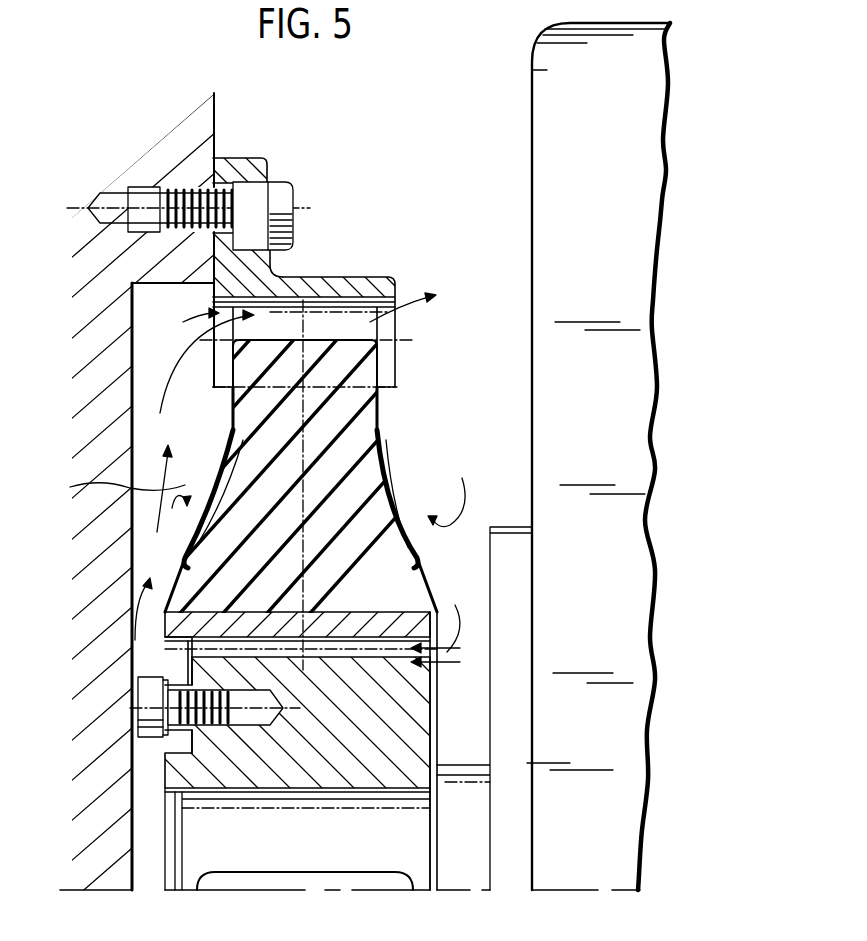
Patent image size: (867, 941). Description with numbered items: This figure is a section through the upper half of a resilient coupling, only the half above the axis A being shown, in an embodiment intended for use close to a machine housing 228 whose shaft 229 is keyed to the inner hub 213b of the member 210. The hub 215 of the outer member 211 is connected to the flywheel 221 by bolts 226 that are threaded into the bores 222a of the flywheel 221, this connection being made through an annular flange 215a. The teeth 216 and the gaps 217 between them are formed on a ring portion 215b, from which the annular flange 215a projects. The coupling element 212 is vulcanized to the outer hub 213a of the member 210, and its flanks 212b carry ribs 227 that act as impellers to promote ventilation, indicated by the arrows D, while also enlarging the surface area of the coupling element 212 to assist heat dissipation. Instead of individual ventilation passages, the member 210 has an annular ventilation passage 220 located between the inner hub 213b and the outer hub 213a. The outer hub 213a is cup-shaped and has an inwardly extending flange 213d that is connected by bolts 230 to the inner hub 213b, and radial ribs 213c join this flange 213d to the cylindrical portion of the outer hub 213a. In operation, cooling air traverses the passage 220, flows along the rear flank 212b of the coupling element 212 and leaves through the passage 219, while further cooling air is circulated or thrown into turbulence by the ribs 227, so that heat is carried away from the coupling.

The member 210 is at (438, 700).
The outer member 211 is at (296, 244).
The coupling element 212 is at (279, 485).
The flank 212b is at (216, 516).
The outer hub 213a is at (397, 627).
The inner hub 213b is at (300, 768).
The radial ribs 213c is at (165, 660).
The inwardly extending flange 213d is at (165, 747).
The hub 215 is at (250, 274).
The annular flange 215a is at (246, 165).
The ring portion 215b is at (378, 290).
The teeth 216 is at (378, 369).
The gaps 217 is at (380, 331).
The passage 219 is at (292, 353).
The annular ventilation passage 220 is at (428, 655).
The flywheel 221 is at (112, 296).
The bores 222a is at (143, 200).
The bolts 226 is at (288, 200).
The ribs 227 is at (227, 465).
The machine housing 228 is at (612, 549).
The shaft 229 is at (263, 847).
The bolts 230 is at (138, 706).
The axis A is at (618, 888).
The arrows D is at (118, 488).